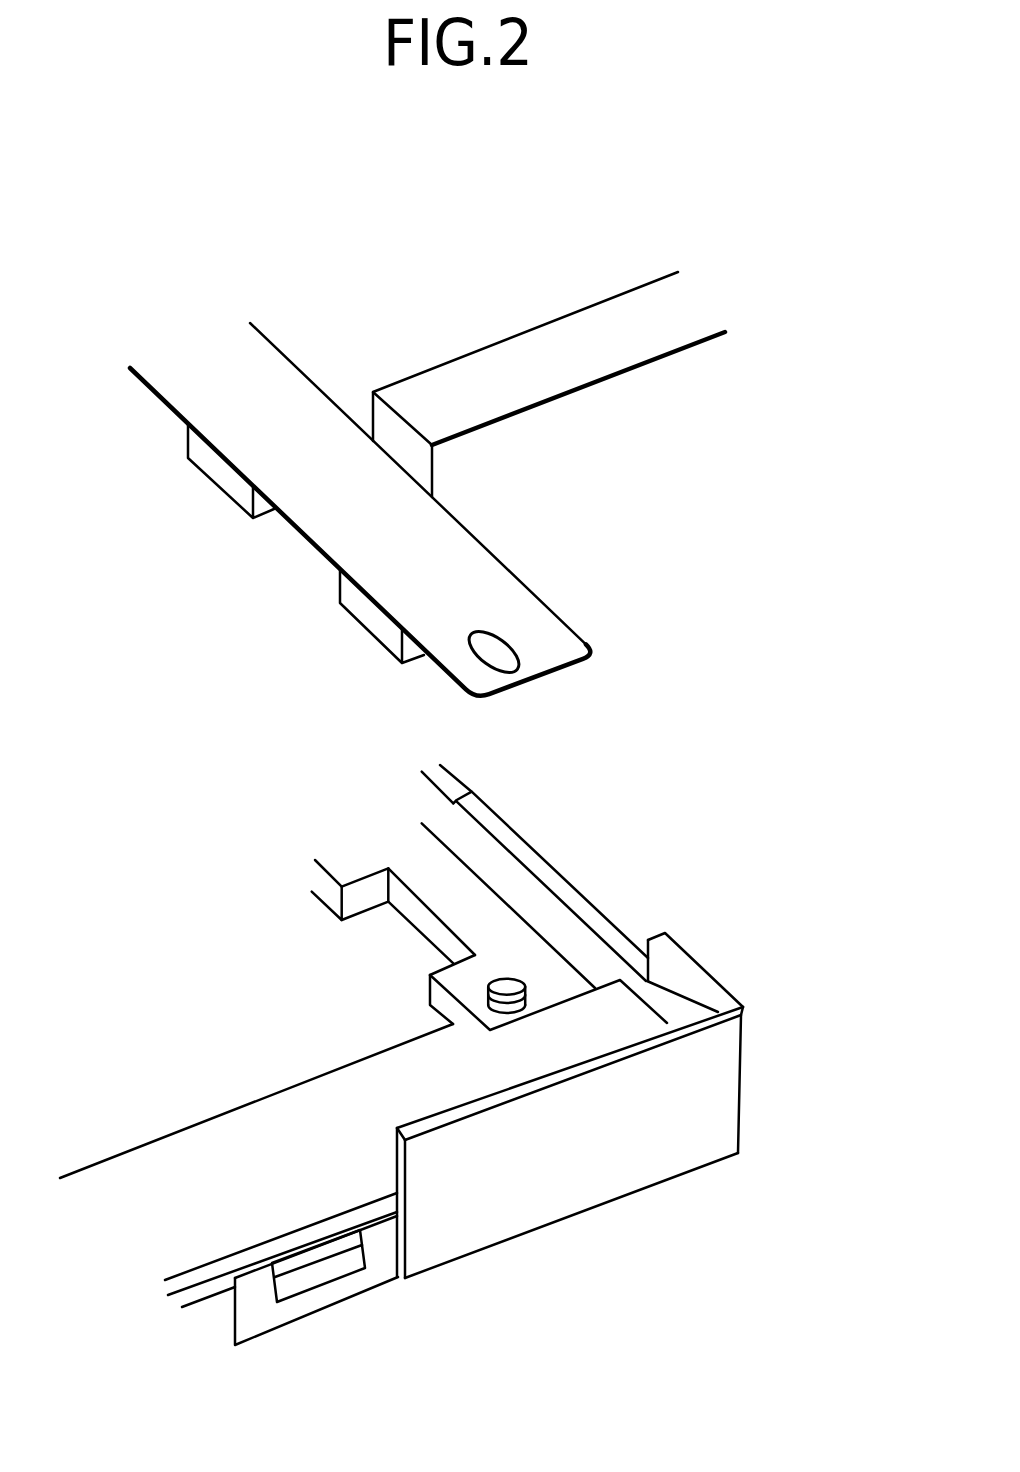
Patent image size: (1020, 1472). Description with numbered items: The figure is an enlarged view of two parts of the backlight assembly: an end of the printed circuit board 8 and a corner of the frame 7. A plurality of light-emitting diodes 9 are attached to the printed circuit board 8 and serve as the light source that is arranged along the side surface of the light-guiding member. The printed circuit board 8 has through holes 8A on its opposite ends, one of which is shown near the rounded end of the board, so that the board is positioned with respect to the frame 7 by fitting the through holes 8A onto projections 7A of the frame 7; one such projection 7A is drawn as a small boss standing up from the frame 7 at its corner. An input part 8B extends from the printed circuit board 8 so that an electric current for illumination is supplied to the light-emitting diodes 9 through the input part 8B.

The frame 7 is at (506, 1221).
The projection 7A is at (512, 982).
The printed circuit board 8 is at (283, 390).
The through hole 8A is at (500, 648).
The input part 8B is at (592, 323).
The light-emitting diode 9 is at (216, 472).